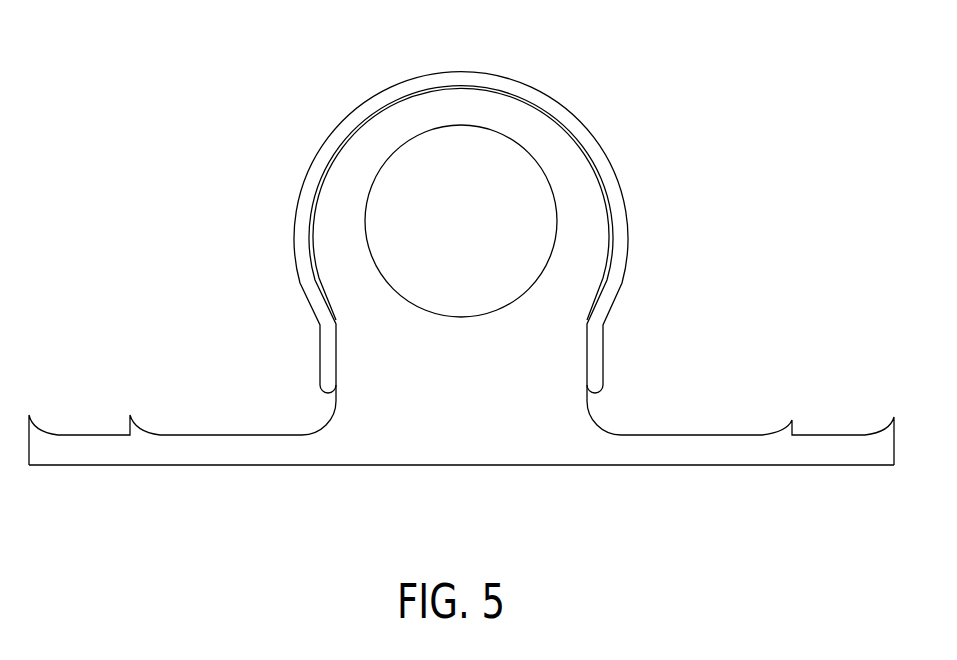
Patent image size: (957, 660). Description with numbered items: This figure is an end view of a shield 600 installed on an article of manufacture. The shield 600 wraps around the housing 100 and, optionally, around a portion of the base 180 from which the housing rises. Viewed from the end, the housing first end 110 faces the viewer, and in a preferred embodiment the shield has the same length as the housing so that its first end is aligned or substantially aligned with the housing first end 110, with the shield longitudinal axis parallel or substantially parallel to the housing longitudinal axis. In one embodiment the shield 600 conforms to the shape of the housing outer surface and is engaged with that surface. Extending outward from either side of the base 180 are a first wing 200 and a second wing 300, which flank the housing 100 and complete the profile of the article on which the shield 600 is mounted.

The housing 100 is at (613, 262).
The housing first end 110 is at (575, 277).
The base 180 is at (462, 377).
The first wing 200 is at (838, 433).
The second wing 300 is at (88, 433).
The shield 600 is at (524, 76).